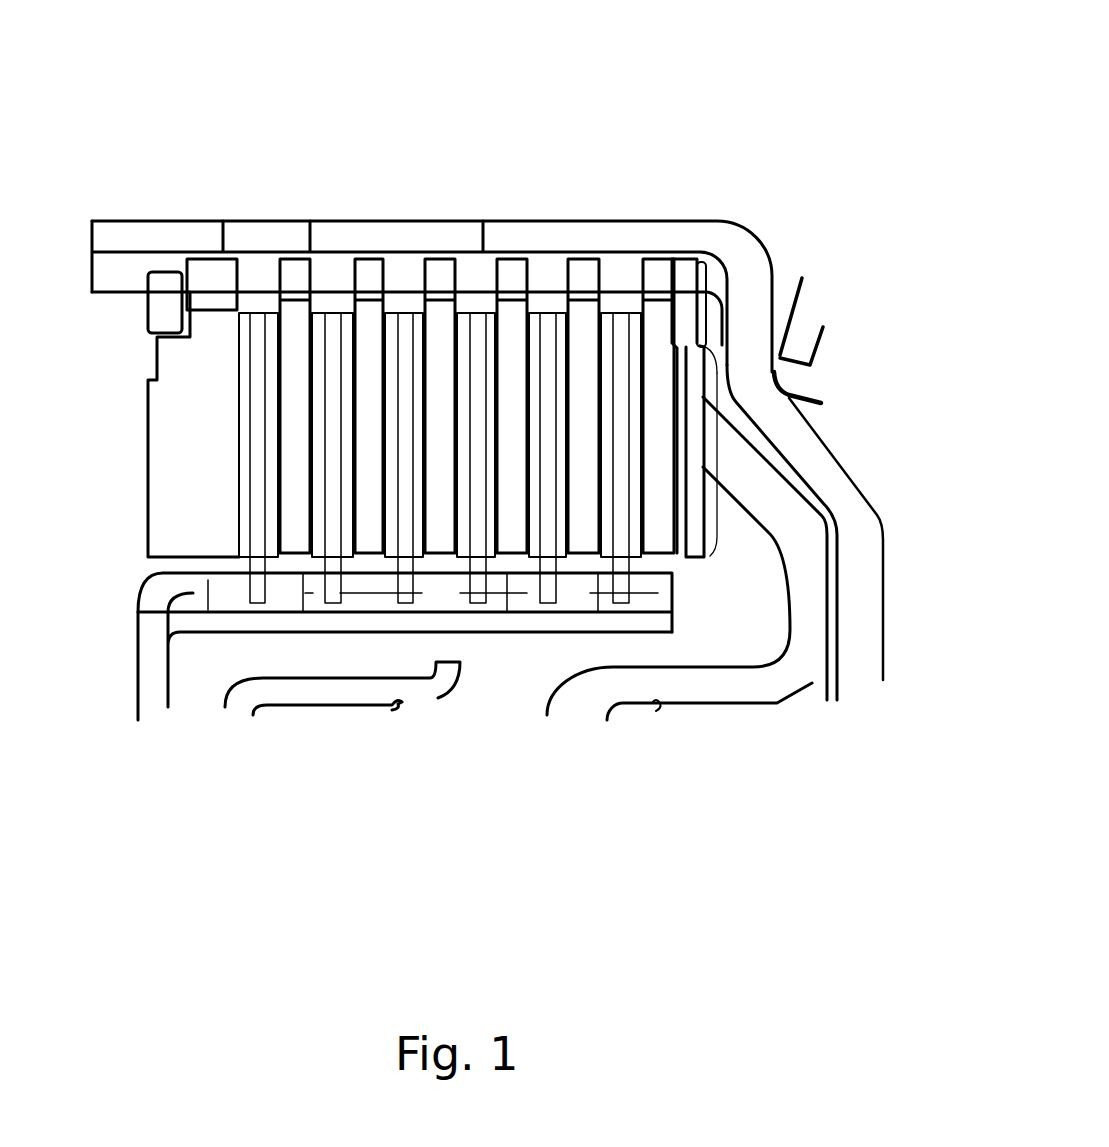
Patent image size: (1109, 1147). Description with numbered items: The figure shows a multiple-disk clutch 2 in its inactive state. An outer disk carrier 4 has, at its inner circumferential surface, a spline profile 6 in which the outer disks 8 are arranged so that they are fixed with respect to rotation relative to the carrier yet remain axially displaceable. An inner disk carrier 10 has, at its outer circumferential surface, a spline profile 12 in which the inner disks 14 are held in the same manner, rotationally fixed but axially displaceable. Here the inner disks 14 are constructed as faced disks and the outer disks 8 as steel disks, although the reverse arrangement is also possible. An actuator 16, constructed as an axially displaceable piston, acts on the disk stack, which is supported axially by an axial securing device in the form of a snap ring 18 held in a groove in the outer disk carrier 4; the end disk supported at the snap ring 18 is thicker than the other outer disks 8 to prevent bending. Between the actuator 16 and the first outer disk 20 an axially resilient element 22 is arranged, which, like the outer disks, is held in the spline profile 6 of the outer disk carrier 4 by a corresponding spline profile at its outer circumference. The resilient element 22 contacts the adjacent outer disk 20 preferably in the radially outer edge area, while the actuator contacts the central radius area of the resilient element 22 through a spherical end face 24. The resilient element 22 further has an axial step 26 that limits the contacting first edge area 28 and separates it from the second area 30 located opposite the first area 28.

The multiple-disk clutch 2 is at (748, 113).
The outer disk carrier 4 is at (737, 245).
The spline profile 6 is at (708, 277).
The outer disks 8 is at (653, 280).
The inner disk carrier 10 is at (150, 630).
The spline profile 12 is at (162, 596).
The inner disks 14 is at (621, 582).
The actuator 16 is at (817, 600).
The snap ring 18 is at (165, 305).
The first outer disk 20 is at (661, 268).
The resilient element 22 is at (820, 517).
The spherical end face 24 is at (703, 423).
The axial step 26 is at (700, 343).
The first edge area 28 is at (722, 302).
The second area 30 is at (716, 466).